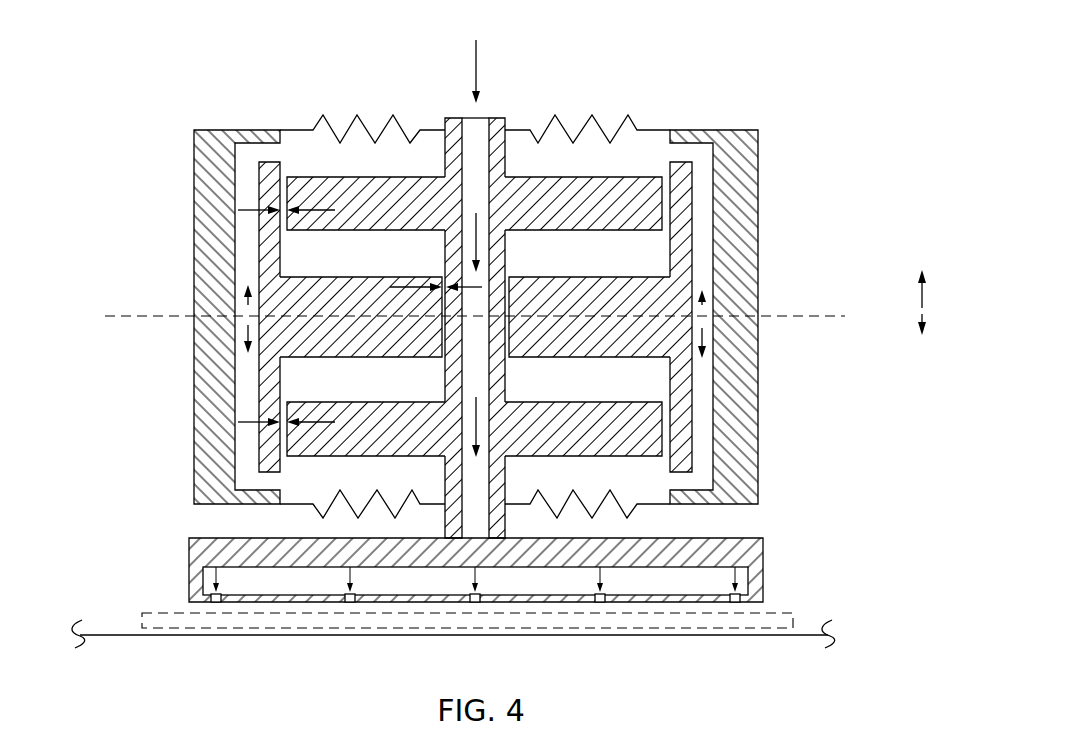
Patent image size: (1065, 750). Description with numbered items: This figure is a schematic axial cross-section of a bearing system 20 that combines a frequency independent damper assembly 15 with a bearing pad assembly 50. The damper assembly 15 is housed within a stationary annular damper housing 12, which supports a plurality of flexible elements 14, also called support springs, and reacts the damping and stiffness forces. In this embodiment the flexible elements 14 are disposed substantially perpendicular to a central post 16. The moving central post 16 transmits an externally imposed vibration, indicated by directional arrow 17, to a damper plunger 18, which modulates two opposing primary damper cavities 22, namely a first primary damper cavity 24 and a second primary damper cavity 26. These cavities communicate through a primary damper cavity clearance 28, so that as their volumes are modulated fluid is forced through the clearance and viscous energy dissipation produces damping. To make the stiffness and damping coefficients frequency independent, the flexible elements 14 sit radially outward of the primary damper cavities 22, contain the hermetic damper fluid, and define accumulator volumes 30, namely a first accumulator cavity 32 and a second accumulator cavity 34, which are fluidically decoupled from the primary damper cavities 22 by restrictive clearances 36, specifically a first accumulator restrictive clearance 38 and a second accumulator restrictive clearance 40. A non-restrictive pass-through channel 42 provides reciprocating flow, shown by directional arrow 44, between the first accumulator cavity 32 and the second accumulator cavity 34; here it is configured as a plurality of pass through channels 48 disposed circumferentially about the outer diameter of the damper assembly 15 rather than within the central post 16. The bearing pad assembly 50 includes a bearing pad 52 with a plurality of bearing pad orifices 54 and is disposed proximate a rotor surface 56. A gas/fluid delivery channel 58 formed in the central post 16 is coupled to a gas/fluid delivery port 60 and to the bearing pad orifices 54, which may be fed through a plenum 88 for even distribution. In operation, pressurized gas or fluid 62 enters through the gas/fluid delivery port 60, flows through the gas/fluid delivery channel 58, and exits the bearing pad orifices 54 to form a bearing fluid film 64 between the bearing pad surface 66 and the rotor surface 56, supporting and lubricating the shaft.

The stationary annular damper housing 12 is at (200, 138).
The flexible elements 14 is at (633, 128).
The damper assembly 15 is at (790, 193).
The central post 16 is at (497, 128).
The directional arrow 17 is at (922, 315).
The damper plunger 18 is at (407, 177).
The bearing system 20 is at (793, 44).
The primary damper cavities 22 is at (595, 316).
The first primary damper cavity 24 is at (660, 245).
The second primary damper cavity 26 is at (657, 383).
The primary damper cavity clearance 28 is at (402, 287).
The accumulator volumes 30 is at (492, 283).
The first accumulator cavity 32 is at (318, 127).
The second accumulator cavity 34 is at (303, 480).
The restrictive clearances 36 is at (207, 302).
The first accumulator restrictive clearance 38 is at (250, 210).
The second accumulator restrictive clearance 40 is at (248, 422).
The non-restrictive pass-through channel 42 is at (454, 317).
The directional arrow 44 is at (247, 332).
The pass through channels 48 is at (253, 235).
The bearing pad assembly 50 is at (880, 609).
The bearing pad 52 is at (519, 614).
The bearing pad orifices 54 is at (350, 600).
The rotor surface 56 is at (108, 633).
The gas/fluid delivery channel 58 is at (470, 118).
The gas/fluid delivery port 60 is at (473, 118).
The pressurized gas or fluid 62 is at (470, 118).
The bearing fluid film 64 is at (288, 625).
The bearing pad surface 66 is at (467, 656).
The plenum 88 is at (528, 585).